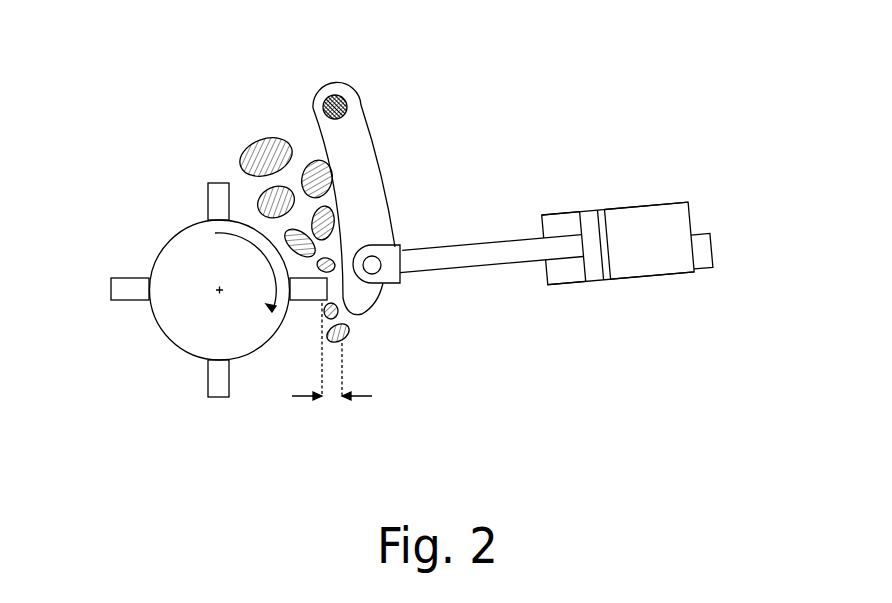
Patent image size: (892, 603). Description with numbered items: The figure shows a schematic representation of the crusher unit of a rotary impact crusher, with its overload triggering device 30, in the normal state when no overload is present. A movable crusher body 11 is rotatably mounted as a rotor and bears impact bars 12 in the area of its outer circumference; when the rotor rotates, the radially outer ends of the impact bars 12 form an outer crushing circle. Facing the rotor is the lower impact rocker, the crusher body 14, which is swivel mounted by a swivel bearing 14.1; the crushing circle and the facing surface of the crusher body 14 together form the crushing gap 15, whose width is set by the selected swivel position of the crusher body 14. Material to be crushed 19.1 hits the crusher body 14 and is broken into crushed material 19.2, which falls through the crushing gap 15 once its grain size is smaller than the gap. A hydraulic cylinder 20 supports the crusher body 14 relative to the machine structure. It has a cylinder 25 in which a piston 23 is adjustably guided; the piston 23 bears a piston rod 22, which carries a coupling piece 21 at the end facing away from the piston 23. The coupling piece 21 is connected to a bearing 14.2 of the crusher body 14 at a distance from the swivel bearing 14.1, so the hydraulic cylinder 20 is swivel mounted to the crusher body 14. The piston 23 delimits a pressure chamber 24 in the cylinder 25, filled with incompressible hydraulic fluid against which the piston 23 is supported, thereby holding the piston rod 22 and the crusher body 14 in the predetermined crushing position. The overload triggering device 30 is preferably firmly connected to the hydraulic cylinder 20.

The movable crusher body 11 is at (187, 335).
The impact bars 12 is at (122, 294).
The crusher body 14 is at (357, 148).
The swivel bearing 14.1 is at (334, 92).
The bearing 14.2 is at (375, 258).
The crushing gap 15 is at (353, 400).
The material to be crushed 19.1 is at (267, 153).
The crushed material 19.2 is at (347, 333).
The hydraulic cylinder 20 is at (648, 256).
The coupling piece 21 is at (389, 271).
The piston rod 22 is at (472, 246).
The piston 23 is at (598, 206).
The pressure chamber 24 is at (639, 215).
The cylinder 25 is at (562, 223).
The overload triggering device 30 is at (702, 240).